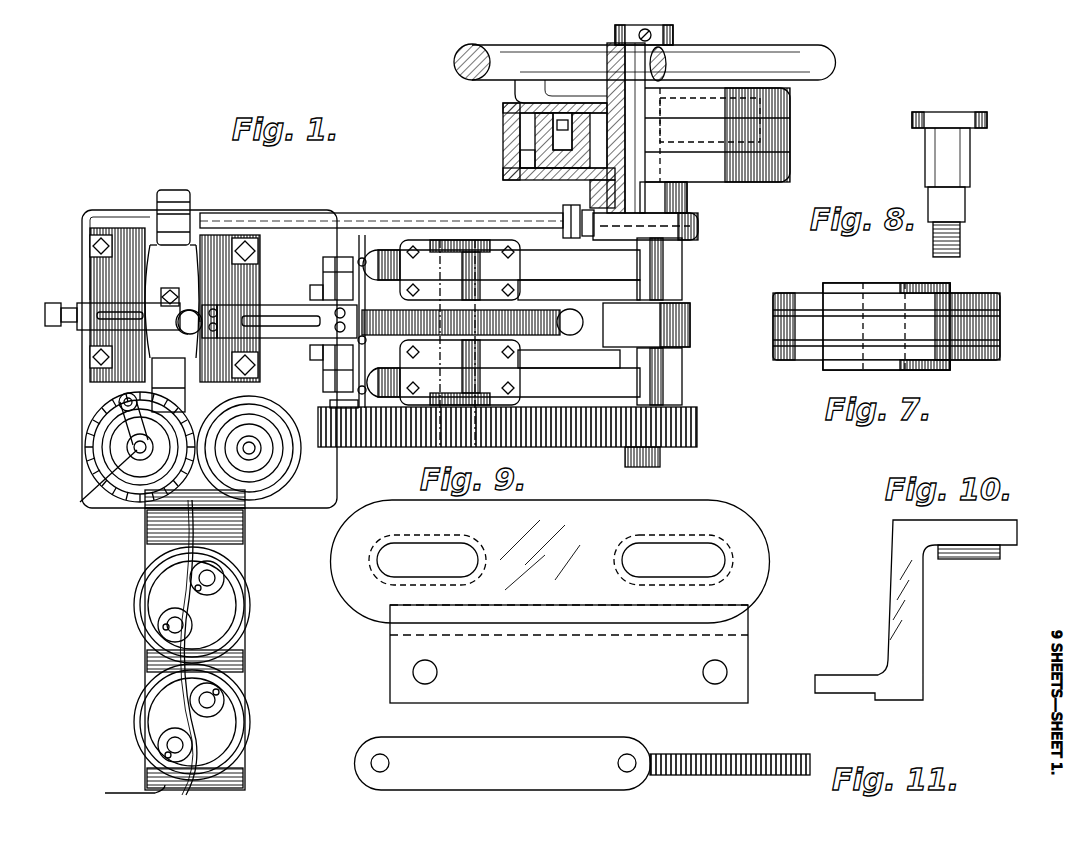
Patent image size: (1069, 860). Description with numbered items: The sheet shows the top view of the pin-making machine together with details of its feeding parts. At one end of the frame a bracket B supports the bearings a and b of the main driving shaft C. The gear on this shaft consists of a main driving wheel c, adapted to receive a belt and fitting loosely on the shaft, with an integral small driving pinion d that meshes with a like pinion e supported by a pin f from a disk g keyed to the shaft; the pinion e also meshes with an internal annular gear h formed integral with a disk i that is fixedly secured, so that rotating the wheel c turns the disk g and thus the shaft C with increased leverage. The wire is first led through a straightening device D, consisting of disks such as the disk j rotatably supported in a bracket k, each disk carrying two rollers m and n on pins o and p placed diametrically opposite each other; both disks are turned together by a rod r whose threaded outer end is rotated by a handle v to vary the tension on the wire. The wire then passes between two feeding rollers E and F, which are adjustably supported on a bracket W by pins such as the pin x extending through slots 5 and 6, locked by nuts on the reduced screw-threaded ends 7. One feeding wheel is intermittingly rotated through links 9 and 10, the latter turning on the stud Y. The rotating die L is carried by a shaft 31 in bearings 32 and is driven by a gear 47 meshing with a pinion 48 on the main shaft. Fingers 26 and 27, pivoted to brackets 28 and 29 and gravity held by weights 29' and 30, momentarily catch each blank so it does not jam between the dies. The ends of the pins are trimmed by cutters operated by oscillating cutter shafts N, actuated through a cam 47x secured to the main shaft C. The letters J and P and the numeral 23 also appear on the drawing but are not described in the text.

In FIG. 1, the main driving wheel c is at (636, 25).
In FIG. 1, the driving pinion d is at (614, 125).
In FIG. 1, the pinion e is at (540, 134).
In FIG. 1, the disk g is at (546, 160).
In FIG. 1, the pin f is at (568, 155).
In FIG. 1, the internal annular gear h is at (520, 155).
In FIG. 1, the main driving shaft C is at (770, 108).
In FIG. 1, the disk i is at (686, 190).
In FIG. 1, the shaft 31 is at (455, 232).
In FIG. 1, the weight 29' is at (333, 294).
In FIG. 1, the reduced screw-threaded end 7 is at (155, 352).
In FIG. 8, the reduced screw-threaded end 7 is at (962, 245).
In FIG. 1, the post J is at (160, 295).
In FIG. 1, the slide bar 23 is at (97, 315).
In FIG. 1, the finger 26 is at (362, 290).
In FIG. 1, the finger 27 is at (362, 348).
In FIG. 1, the bracket 28 is at (323, 268).
In FIG. 1, the bracket 29 is at (297, 369).
In FIG. 1, the weight 30 is at (352, 404).
In FIG. 1, the rotating die L is at (452, 318).
In FIG. 1, the bearing a is at (680, 270).
In FIG. 1, the bearing 32 is at (505, 292).
In FIG. 1, the oscillating cutter shaft N is at (590, 295).
In FIG. 1, the bracket B is at (600, 340).
In FIG. 1, the cam 47x is at (672, 315).
In FIG. 1, the bearing b is at (682, 380).
In FIG. 1, the pinion 48 is at (697, 438).
In FIG. 1, the gear 47 is at (388, 436).
In FIG. 1, the feeding roller E is at (100, 452).
In FIG. 1, the link 10 is at (128, 418).
In FIG. 1, the link 9 is at (120, 398).
In FIG. 1, the stud Y is at (93, 482).
In FIG. 1, the feeding roller F is at (252, 452).
In FIG. 7, the feeding roller F is at (985, 328).
In FIG. 1, the straightening device D is at (240, 672).
In FIG. 1, the bracket k is at (150, 552).
In FIG. 1, the roller m is at (225, 582).
In FIG. 1, the roller n is at (170, 642).
In FIG. 1, the pin o is at (174, 643).
In FIG. 1, the pin p is at (206, 686).
In FIG. 1, the drum P is at (225, 622).
In FIG. 1, the disk j is at (160, 728).
In FIG. 1, the handle v is at (138, 652).
In FIG. 9, the plate W is at (358, 595).
In FIG. 10, the plate W is at (910, 590).
In FIG. 9, the slot 5 is at (380, 545).
In FIG. 9, the slot 6 is at (685, 545).
In FIG. 9, the rod r is at (410, 750).
In FIG. 8, the pin x is at (968, 168).